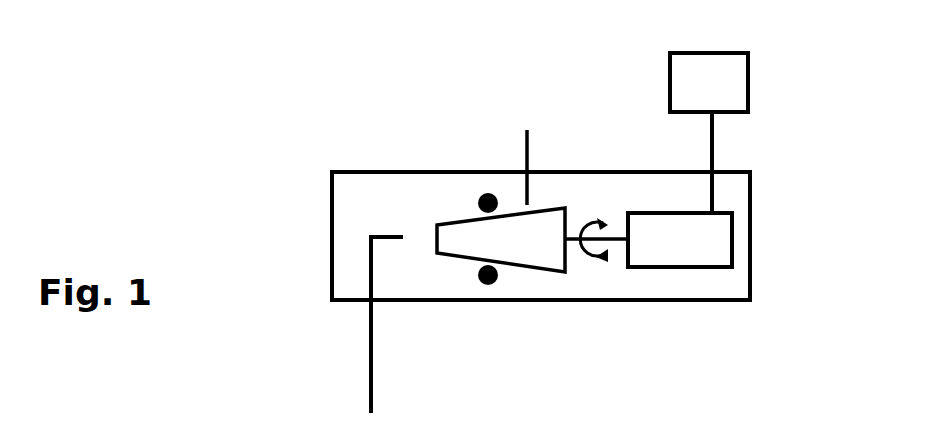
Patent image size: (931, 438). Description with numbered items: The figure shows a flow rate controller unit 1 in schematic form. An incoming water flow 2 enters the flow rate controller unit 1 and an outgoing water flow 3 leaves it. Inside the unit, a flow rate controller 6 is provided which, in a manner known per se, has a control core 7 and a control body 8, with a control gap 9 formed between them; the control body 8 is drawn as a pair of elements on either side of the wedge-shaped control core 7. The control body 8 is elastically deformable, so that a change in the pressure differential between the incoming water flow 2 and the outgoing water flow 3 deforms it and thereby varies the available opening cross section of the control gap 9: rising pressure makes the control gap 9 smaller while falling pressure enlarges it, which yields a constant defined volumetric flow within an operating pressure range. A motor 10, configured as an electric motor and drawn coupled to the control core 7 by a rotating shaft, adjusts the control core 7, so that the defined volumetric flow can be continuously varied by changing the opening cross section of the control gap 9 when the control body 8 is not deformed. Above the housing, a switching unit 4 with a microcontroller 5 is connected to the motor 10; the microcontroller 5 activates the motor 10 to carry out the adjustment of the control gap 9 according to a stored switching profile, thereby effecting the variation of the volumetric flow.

The flow rate controller unit 1 is at (298, 86).
The incoming water flow 2 is at (527, 148).
The outgoing water flow 3 is at (370, 374).
The switching unit 4 is at (620, 106).
The microcontroller 5 is at (738, 87).
The flow rate controller 6 is at (406, 193).
The control core 7 is at (522, 264).
The control body 8 is at (487, 192).
The control gap 9 is at (460, 266).
The motor 10 is at (645, 253).